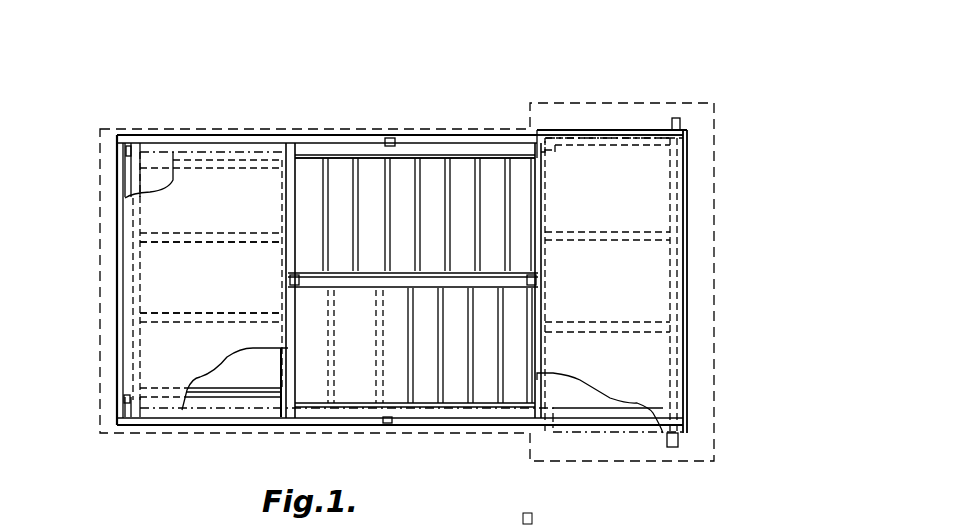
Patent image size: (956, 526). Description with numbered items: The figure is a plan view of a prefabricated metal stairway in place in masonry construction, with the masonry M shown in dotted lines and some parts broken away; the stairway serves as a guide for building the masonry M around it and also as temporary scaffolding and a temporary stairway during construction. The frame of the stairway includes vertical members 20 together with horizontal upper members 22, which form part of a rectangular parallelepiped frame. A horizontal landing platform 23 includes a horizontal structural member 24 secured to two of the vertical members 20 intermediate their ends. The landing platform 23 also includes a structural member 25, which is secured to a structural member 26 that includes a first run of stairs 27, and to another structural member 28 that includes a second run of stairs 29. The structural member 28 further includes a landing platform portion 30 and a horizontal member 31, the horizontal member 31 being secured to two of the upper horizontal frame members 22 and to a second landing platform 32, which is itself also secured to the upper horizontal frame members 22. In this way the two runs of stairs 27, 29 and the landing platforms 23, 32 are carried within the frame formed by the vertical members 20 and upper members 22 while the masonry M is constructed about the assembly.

The vertical members 20 is at (130, 147).
The horizontal upper member 22 is at (297, 134).
The horizontal landing platform 23 is at (241, 215).
The horizontal structural member 24 is at (143, 282).
The structural member 25 is at (282, 253).
The structural member 26 is at (378, 158).
The first run of stairs 27 is at (440, 179).
The structural member 28 is at (432, 288).
The second run of stairs 29 is at (453, 377).
The landing platform portion 30 is at (622, 235).
The horizontal member 31 is at (545, 198).
The second landing platform 32 is at (645, 195).
The masonry M is at (100, 188).